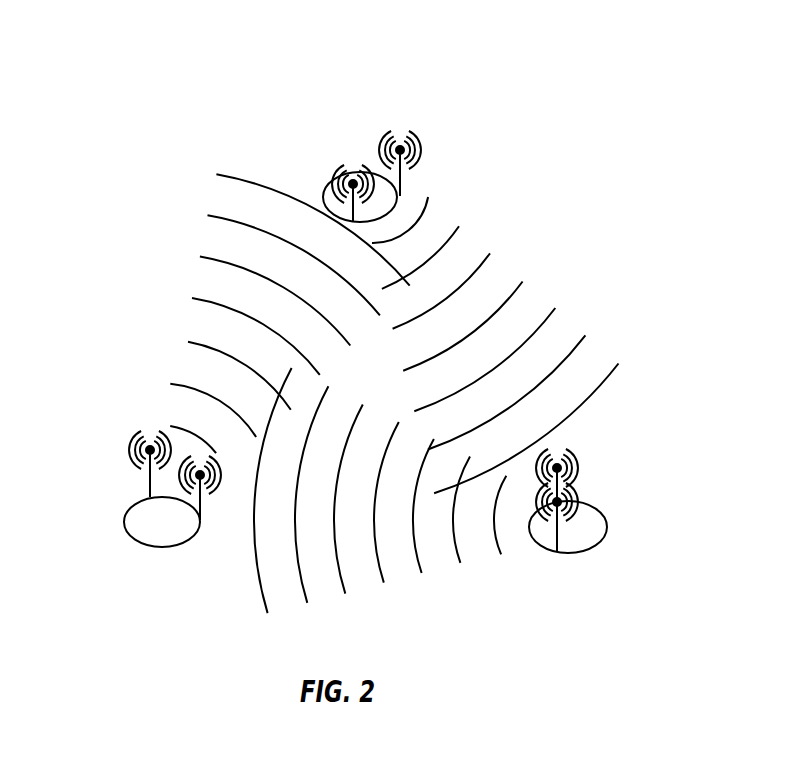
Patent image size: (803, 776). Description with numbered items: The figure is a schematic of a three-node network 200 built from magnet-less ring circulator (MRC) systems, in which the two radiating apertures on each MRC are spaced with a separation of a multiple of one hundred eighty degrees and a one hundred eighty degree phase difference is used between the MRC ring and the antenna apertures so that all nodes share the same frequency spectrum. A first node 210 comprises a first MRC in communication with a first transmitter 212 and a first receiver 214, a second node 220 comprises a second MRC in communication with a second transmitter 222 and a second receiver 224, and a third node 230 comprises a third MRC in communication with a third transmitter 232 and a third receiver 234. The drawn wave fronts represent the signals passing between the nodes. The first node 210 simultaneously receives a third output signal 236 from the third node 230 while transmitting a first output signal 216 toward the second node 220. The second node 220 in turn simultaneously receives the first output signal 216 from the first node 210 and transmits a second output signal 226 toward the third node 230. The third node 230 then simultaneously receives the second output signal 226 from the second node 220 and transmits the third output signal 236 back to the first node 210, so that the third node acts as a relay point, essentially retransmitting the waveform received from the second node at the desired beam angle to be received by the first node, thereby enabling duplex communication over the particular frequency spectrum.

The three-node network 200 is at (137, 208).
The first node 210 is at (375, 121).
The first transmitter 212 is at (421, 140).
The first receiver 214 is at (337, 172).
The first output signal 216 is at (524, 266).
The second node 220 is at (587, 565).
The second transmitter 222 is at (583, 497).
The second receiver 224 is at (580, 451).
The second output signal 226 is at (404, 594).
The third node 230 is at (168, 566).
The third transmitter 232 is at (123, 467).
The third receiver 234 is at (215, 498).
The third output signal 236 is at (180, 303).